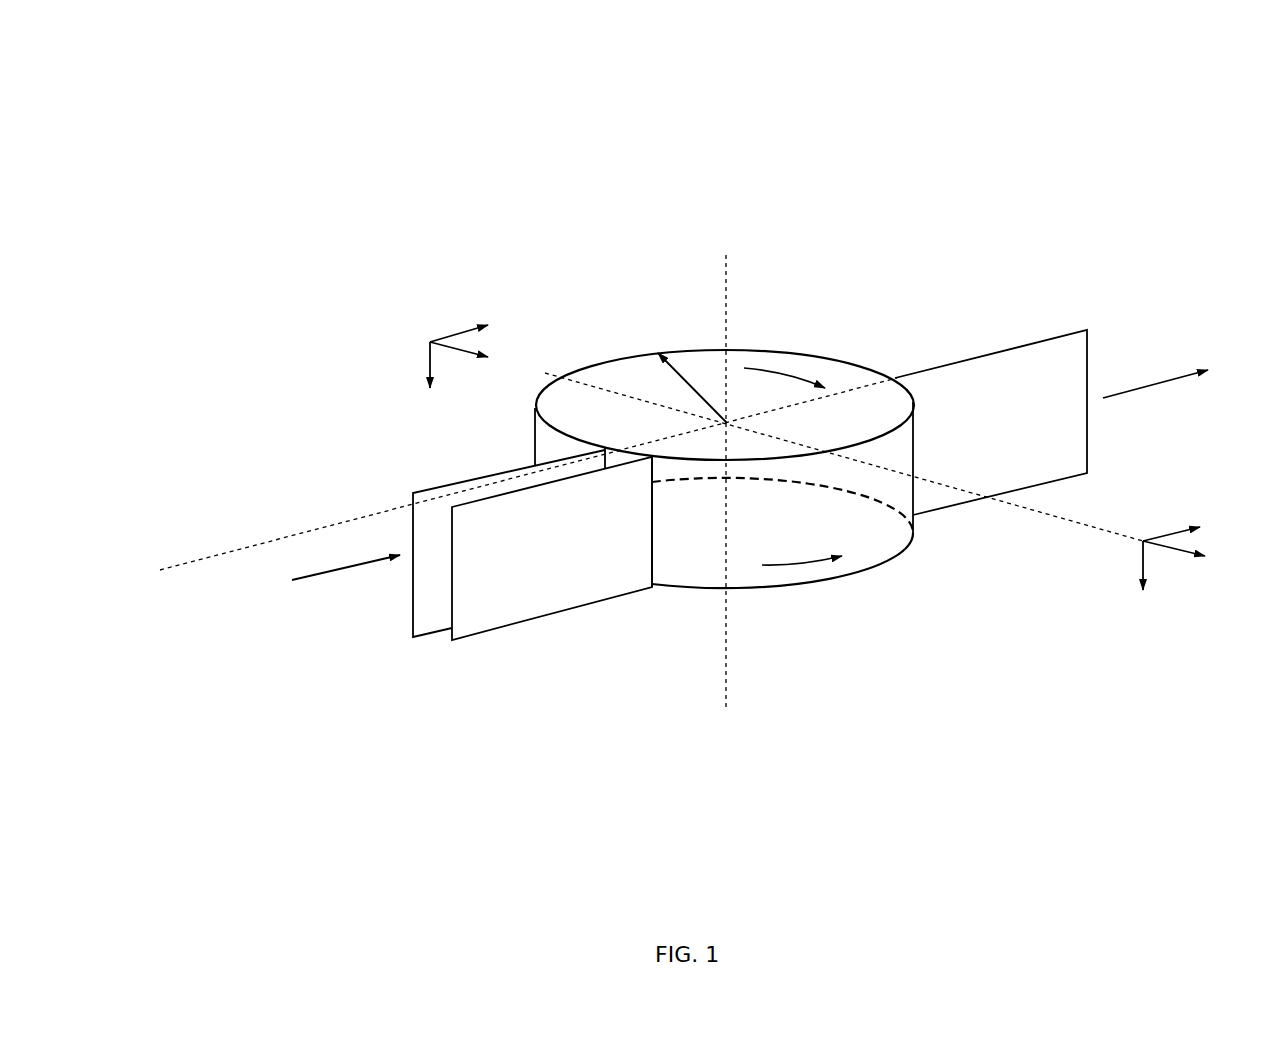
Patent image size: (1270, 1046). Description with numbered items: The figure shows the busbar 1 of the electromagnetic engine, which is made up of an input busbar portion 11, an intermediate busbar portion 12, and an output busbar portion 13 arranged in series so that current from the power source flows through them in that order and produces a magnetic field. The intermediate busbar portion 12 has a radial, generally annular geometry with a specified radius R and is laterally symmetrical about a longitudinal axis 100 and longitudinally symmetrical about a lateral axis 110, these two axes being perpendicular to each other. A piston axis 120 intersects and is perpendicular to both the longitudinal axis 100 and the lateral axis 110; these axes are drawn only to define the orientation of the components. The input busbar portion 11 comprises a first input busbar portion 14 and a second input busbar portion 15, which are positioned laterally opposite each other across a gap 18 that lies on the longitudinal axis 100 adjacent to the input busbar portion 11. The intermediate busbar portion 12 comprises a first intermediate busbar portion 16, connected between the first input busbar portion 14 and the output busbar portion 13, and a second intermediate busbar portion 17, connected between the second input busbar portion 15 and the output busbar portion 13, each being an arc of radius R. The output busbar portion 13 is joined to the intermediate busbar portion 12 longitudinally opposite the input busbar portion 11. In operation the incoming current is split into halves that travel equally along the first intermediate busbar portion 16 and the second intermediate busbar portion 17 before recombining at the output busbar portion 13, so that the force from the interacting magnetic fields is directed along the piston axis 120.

The busbar 1 is at (865, 193).
The input busbar portion 11 is at (496, 618).
The intermediate busbar portion 12 is at (742, 500).
The output busbar portion 13 is at (1048, 323).
The first input busbar portion 14 is at (413, 612).
The second input busbar portion 15 is at (463, 628).
The first intermediate busbar portion 16 is at (620, 360).
The second intermediate busbar portion 17 is at (757, 590).
The gap 18 is at (628, 452).
The longitudinal axis 100 is at (337, 522).
The lateral axis 110 is at (1037, 512).
The piston axis 120 is at (725, 680).